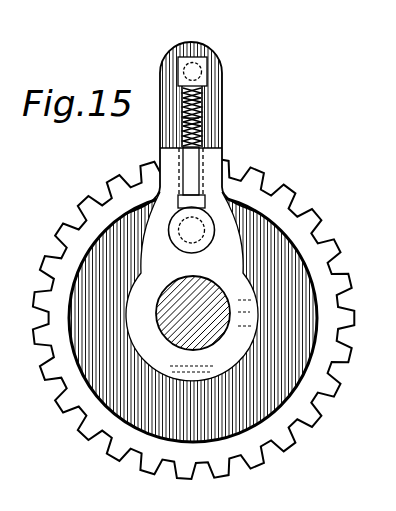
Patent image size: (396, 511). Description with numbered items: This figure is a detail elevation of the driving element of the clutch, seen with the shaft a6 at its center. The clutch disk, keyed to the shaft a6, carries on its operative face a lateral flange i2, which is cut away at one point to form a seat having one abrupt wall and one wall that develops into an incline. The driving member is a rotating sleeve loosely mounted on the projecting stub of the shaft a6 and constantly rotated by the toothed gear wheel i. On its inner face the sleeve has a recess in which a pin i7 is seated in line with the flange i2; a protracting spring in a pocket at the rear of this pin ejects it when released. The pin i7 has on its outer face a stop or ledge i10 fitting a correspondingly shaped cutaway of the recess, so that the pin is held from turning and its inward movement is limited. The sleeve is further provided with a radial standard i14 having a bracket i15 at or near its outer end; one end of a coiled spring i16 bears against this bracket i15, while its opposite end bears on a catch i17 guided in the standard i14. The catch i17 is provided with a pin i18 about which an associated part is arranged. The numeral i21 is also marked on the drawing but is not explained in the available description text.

The gear wheel i is at (330, 242).
The lateral flange i2 is at (260, 333).
The pin i7 is at (205, 237).
The stop or ledge i10 is at (199, 203).
The radial standard i14 is at (210, 72).
The bracket i15 is at (207, 43).
The coiled spring i16 is at (198, 95).
The catch i17 is at (192, 173).
The pin i18 is at (197, 118).
The slot i21 is at (183, 150).
The shaft a6 is at (193, 313).